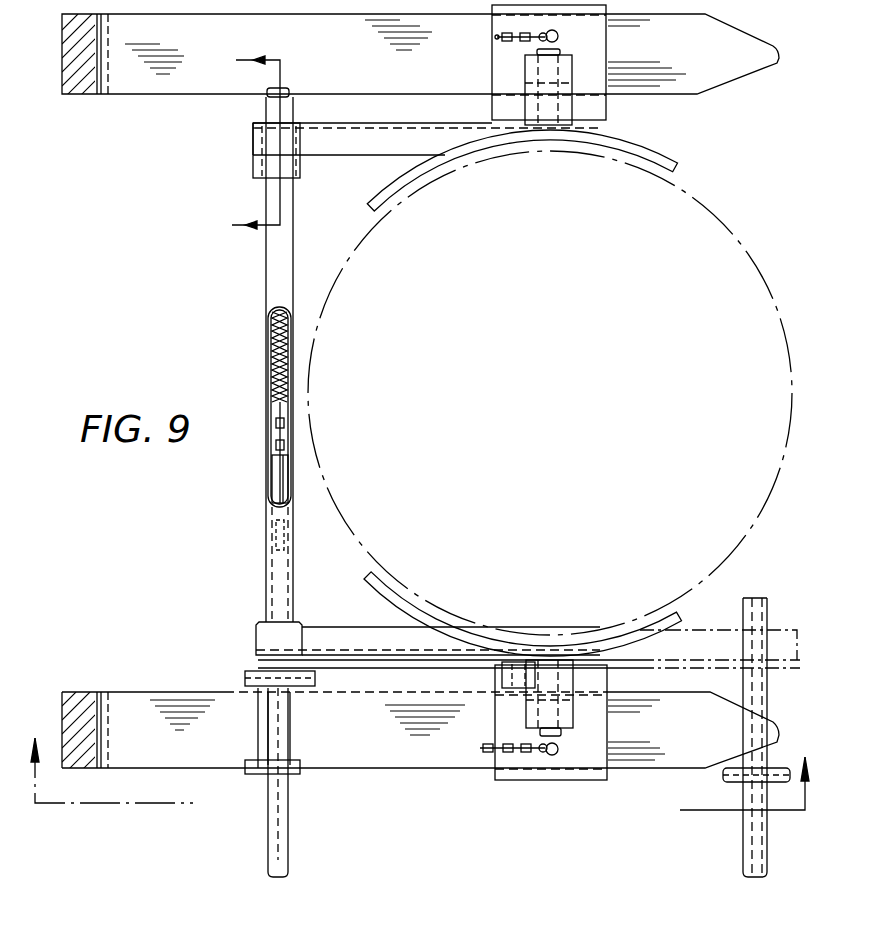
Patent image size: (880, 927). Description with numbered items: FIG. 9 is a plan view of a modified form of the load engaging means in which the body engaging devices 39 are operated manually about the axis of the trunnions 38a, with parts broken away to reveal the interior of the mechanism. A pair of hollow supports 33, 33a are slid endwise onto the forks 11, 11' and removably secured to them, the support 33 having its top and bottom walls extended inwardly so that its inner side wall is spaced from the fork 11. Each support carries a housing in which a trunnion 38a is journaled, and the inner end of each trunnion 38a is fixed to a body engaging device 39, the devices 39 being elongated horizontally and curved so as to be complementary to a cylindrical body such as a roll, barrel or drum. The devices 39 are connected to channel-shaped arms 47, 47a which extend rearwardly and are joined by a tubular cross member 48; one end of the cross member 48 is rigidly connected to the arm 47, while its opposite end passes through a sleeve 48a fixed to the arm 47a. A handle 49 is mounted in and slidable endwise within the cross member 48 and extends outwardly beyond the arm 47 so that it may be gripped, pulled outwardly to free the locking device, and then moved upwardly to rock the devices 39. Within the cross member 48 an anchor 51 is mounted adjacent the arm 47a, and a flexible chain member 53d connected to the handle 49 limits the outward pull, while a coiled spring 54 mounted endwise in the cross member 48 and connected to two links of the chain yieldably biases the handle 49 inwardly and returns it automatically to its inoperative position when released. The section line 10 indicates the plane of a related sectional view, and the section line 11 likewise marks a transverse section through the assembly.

The section line 10- 10 is at (235, 145).
The fork 11 is at (423, 737).
The fork 11' is at (420, 72).
The support 33 is at (443, 772).
The support 33a is at (590, 52).
The trunnion 38a is at (570, 713).
The body engaging device 39 is at (474, 147).
The arm 47 is at (338, 640).
The arm 47a is at (327, 146).
The tubular cross member 48 is at (268, 562).
The sleeve 48a is at (268, 170).
The handle 49 is at (280, 478).
The anchor 51 is at (289, 90).
The plunger 53d is at (293, 423).
The coiled spring 54 is at (292, 352).